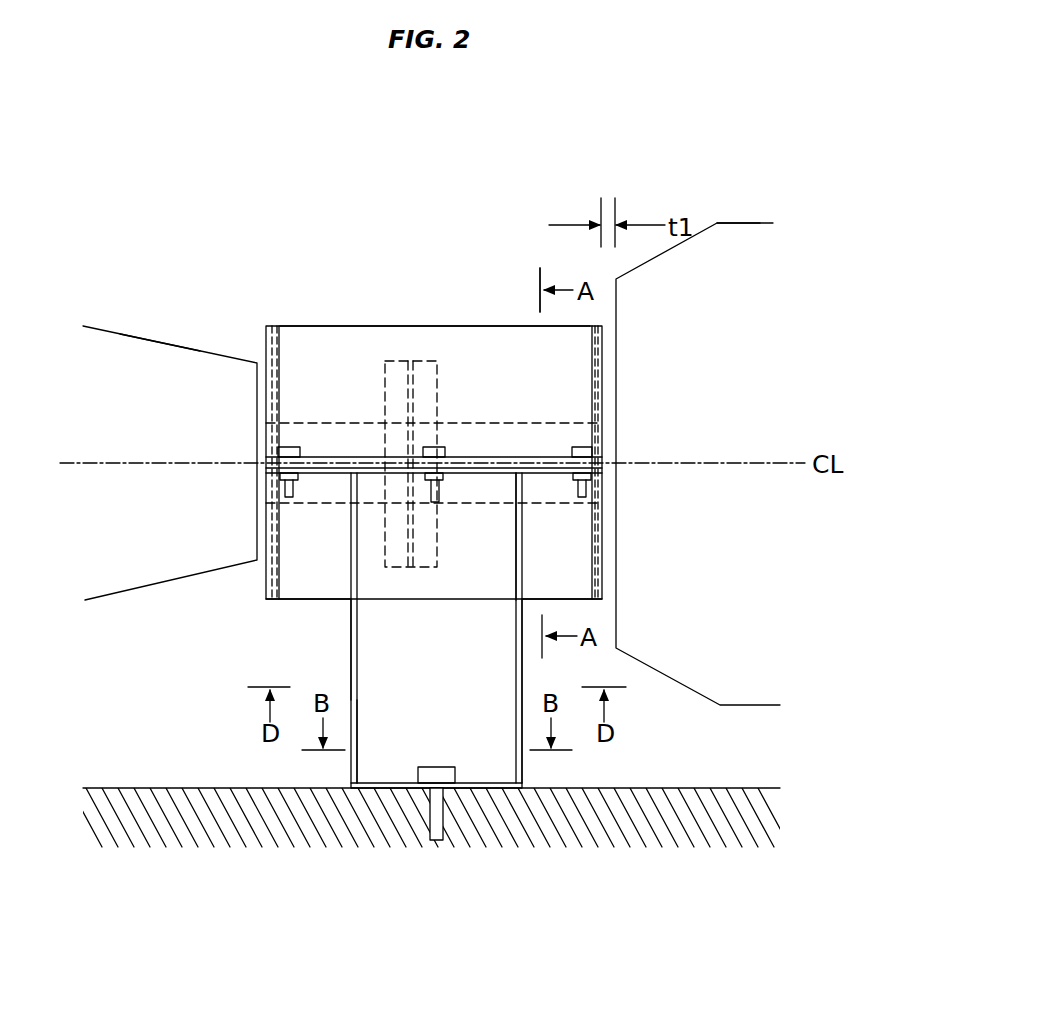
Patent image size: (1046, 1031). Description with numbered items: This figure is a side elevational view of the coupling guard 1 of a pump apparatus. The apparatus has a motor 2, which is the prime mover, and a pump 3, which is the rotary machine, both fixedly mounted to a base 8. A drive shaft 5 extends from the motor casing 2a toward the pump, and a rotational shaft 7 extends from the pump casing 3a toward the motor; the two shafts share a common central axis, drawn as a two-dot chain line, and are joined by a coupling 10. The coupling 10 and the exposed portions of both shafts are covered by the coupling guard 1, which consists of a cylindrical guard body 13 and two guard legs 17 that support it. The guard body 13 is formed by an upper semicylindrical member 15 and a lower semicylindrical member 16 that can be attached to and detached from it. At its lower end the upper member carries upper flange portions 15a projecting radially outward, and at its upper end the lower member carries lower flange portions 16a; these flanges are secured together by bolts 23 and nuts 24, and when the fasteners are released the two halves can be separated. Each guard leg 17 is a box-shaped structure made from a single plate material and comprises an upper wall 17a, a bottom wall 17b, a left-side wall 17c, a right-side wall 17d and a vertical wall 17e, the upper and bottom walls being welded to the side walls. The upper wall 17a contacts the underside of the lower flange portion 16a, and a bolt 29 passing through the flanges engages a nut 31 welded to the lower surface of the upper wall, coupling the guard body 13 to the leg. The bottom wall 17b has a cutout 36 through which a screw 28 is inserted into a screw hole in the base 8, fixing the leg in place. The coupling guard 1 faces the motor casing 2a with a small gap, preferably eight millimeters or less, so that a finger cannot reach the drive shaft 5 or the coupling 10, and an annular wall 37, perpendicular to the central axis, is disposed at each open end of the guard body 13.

The coupling guard 1 is at (332, 248).
The motor 2 is at (753, 220).
The motor casing 2a is at (730, 223).
The pump 3 is at (122, 333).
The pump casing 3a is at (157, 345).
The drive shaft 5 is at (575, 423).
The rotational shaft 7 is at (363, 423).
The base 8 is at (165, 788).
The coupling 10 is at (415, 361).
The guard body 13 is at (407, 322).
The upper semicylindrical member 15 is at (490, 325).
The upper flange portion 15a is at (520, 457).
The lower semicylindrical member 16 is at (277, 600).
The lower flange portion 16a is at (565, 473).
The guard leg 17 is at (350, 628).
The upper wall 17a is at (506, 478).
The bottom wall 17b is at (385, 783).
The left-side wall 17c is at (358, 655).
The right-side wall 17d is at (516, 700).
The vertical wall 17e is at (520, 773).
The bolt 23 is at (284, 447).
The nut 24 is at (283, 476).
The screw 28 is at (437, 767).
The bolt 29 is at (447, 447).
The nut 31 is at (440, 480).
The cutout 36 is at (430, 790).
The annular wall 37 is at (286, 325).